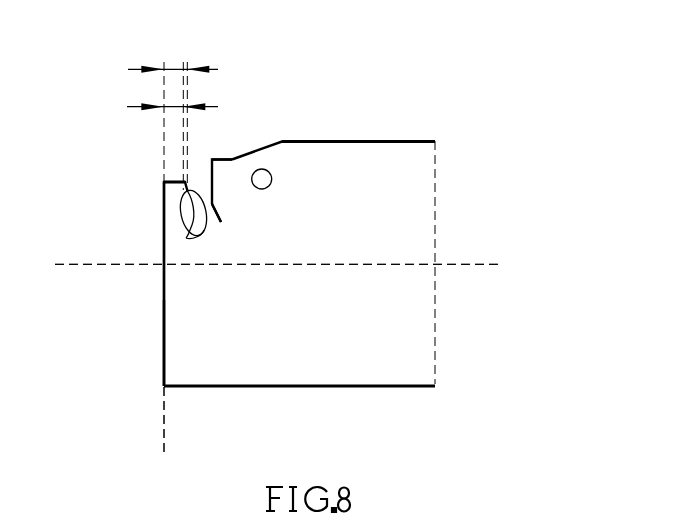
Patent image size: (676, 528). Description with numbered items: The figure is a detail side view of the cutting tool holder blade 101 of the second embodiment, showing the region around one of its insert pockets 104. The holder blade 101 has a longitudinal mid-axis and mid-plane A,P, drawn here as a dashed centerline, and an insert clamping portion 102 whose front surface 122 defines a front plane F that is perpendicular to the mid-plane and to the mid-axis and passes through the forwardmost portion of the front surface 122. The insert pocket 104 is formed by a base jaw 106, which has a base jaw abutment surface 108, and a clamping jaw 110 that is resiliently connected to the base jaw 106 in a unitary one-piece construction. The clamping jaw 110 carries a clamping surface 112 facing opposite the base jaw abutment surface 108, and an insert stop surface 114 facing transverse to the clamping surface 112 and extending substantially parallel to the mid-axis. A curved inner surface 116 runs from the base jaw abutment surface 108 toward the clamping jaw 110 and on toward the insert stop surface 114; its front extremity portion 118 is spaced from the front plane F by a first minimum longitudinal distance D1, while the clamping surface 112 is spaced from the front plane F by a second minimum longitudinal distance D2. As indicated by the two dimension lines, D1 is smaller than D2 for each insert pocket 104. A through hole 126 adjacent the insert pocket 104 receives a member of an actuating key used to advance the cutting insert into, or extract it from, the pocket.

The cutting tool holder blade 101 is at (380, 110).
The insert clamping portion 102 is at (152, 216).
The insert pocket 104 is at (201, 158).
The base jaw 106 is at (237, 157).
The base jaw abutment surface 108 is at (212, 160).
The clamping jaw 110 is at (163, 184).
The clamping surface 112 is at (200, 228).
The insert stop surface 114 is at (163, 182).
The curved inner surface 116 is at (221, 226).
The front extremity portion 118 is at (186, 212).
The front surface 122 is at (163, 338).
The through hole 126 is at (267, 186).
The first minimum longitudinal distance D1 is at (175, 106).
The second minimum longitudinal distance D2 is at (174, 67).
The front plane F is at (164, 432).
The longitudinal mid-axis and mid-plane A,P is at (487, 263).